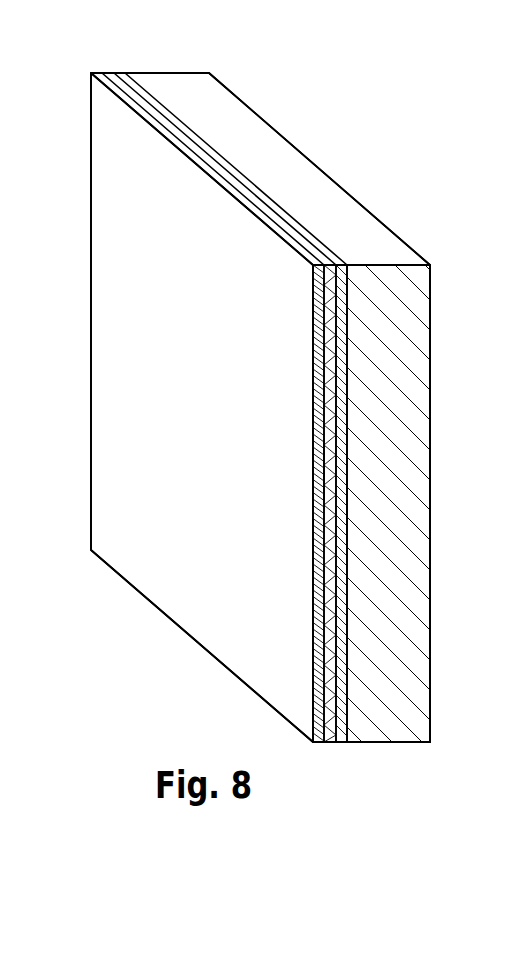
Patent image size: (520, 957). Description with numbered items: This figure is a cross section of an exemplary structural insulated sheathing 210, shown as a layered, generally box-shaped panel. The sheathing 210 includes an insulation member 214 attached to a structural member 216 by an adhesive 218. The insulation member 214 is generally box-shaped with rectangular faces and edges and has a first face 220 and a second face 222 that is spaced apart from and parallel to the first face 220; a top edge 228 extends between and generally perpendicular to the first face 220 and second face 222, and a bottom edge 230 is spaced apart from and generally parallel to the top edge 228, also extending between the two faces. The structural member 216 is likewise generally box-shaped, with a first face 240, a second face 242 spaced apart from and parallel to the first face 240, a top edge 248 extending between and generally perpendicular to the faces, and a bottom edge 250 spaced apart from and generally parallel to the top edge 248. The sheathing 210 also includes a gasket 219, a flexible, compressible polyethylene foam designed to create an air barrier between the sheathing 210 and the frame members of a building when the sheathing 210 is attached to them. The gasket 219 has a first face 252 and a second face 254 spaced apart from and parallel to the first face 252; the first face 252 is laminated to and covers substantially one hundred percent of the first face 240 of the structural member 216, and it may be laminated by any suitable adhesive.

The structural insulated sheathing 210 is at (136, 57).
The insulation member 214 is at (373, 252).
The structural member 216 is at (205, 150).
The adhesive 218 is at (318, 238).
The gasket 219 is at (138, 105).
The first face 220 is at (345, 505).
The second face 222 is at (430, 443).
The top edge 228 is at (312, 180).
The bottom edge 230 is at (392, 742).
The first face 240 is at (322, 330).
The second face 242 is at (336, 355).
The top edge 248 is at (220, 157).
The bottom edge 250 is at (328, 742).
The first face 252 is at (324, 464).
The second face 254 is at (243, 617).